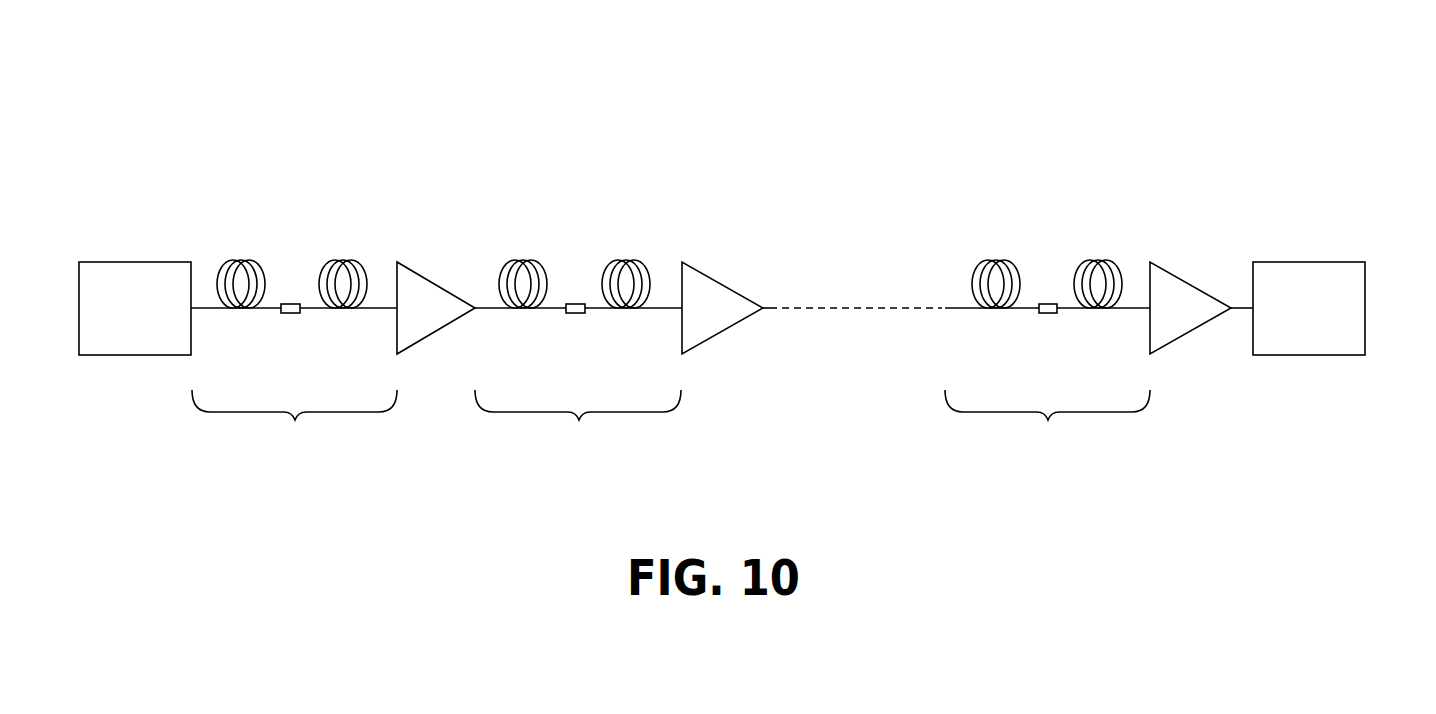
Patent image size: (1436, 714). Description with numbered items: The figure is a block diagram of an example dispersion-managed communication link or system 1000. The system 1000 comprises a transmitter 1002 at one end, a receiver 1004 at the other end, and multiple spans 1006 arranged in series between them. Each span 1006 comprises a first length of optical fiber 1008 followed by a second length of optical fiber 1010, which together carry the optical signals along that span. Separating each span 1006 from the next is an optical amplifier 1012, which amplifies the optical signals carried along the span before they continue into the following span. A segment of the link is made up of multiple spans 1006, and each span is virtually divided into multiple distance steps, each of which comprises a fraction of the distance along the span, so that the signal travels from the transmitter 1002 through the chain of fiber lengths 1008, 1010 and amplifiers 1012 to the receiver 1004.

The dispersion-managed communication link or system 1000 is at (1387, 105).
The transmitter 1002 is at (161, 322).
The receiver 1004 is at (1334, 322).
The span 1006 is at (671, 420).
The first length of optical fiber 1008 is at (241, 260).
The second length of optical fiber 1010 is at (345, 260).
The optical amplifier 1012 is at (452, 322).